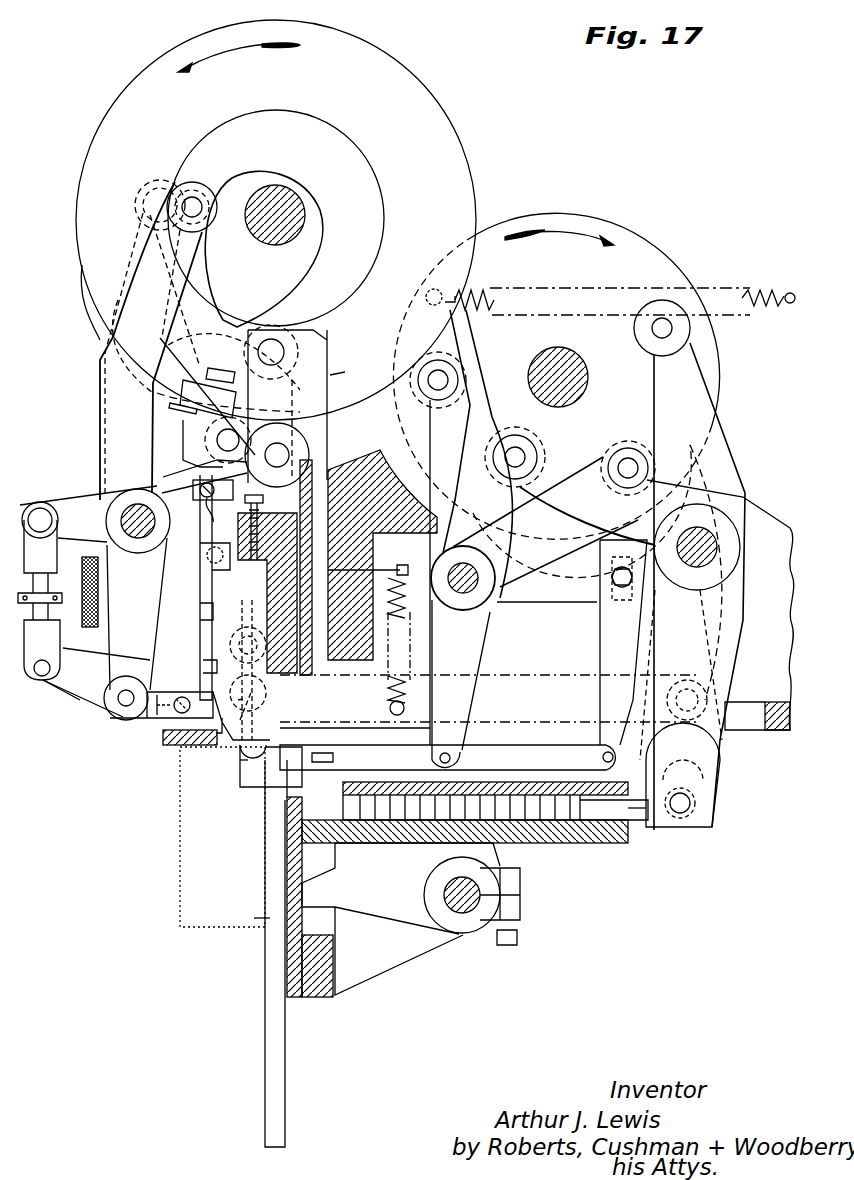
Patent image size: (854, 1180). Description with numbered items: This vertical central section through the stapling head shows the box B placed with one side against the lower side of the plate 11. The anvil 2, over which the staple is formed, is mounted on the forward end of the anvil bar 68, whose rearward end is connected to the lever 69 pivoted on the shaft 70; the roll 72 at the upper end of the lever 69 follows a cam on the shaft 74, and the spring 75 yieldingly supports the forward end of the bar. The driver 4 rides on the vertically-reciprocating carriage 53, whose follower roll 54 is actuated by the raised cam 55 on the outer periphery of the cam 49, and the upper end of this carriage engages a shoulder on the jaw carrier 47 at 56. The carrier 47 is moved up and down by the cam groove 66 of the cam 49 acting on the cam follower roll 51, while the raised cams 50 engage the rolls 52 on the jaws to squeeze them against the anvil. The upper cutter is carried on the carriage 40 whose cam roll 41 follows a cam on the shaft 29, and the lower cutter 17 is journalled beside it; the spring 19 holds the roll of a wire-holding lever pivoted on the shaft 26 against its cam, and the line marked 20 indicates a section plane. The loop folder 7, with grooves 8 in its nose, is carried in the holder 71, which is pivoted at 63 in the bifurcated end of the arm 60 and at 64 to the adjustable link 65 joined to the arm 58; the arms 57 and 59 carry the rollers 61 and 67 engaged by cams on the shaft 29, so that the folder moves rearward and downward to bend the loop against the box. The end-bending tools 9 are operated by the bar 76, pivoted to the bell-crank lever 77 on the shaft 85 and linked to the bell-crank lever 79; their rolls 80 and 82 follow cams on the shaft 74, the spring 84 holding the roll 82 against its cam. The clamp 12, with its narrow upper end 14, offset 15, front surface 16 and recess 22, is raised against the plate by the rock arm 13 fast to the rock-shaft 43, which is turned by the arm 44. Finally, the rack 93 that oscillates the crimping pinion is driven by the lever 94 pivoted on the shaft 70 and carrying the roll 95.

The anvil 2 is at (262, 712).
The driver 4 is at (258, 722).
The loop folder 7 is at (190, 716).
The grooves 8 is at (235, 752).
The end-bending tools 9 is at (262, 775).
The plate 11 is at (168, 745).
The vertically movable clamp 12 is at (294, 995).
The rock arm 13 is at (408, 912).
The narrow upper end 14 is at (244, 775).
The offset 15 is at (264, 790).
The front surface 16 is at (270, 876).
The lower cutter 17 is at (262, 668).
The spring 19 is at (407, 20).
The section line 20- 20 is at (557, 150).
The recess 22 is at (285, 964).
The shaft 26 is at (158, 512).
The shaft 29 is at (300, 205).
The vertically-reciprocating carriage 40 is at (205, 472).
The cam roll 41 is at (200, 440).
The rock-shaft 43 is at (482, 888).
The arm 44 is at (440, 852).
The vertically-reciprocating carrier 47 is at (200, 603).
The cam 49 is at (430, 116).
The raised cams 50 is at (235, 322).
The cam follower roll 51 is at (300, 340).
The rolls 52 is at (190, 390).
The vertically-reciprocating carriage 53 is at (263, 520).
The follower roll 54 is at (310, 420).
The raised cam 55 is at (100, 336).
The shoulder engagement 56 is at (351, 364).
The upwardly-extending arm 57 is at (125, 273).
The forwardly-extending arm 58 is at (72, 505).
The upwardly-extending arm 59 is at (105, 408).
The downwardly-extending arm 60 is at (135, 629).
The roller 61 is at (160, 183).
The pivot 63 is at (85, 700).
The pivot 64 is at (42, 676).
The adjustable link 65 is at (60, 642).
The cam groove 66 is at (318, 252).
The roller 67 is at (200, 190).
The anvil bar 68 is at (530, 672).
The lever 69 is at (605, 426).
The shaft 70 is at (712, 555).
The holder 71 is at (139, 619).
The roll 72 is at (520, 438).
The shaft 74 is at (580, 366).
The spring 75 is at (410, 568).
The bar 76 is at (463, 655).
The bell-crank lever 77 is at (540, 565).
The bell-crank lever 79 is at (462, 540).
The roll 80 is at (630, 447).
The roll 82 is at (445, 405).
The spring 84 is at (488, 292).
The shaft 85 is at (462, 598).
The rack 93 is at (633, 812).
The lever 94 is at (722, 690).
The roll 95 is at (675, 305).
The box B is at (178, 836).